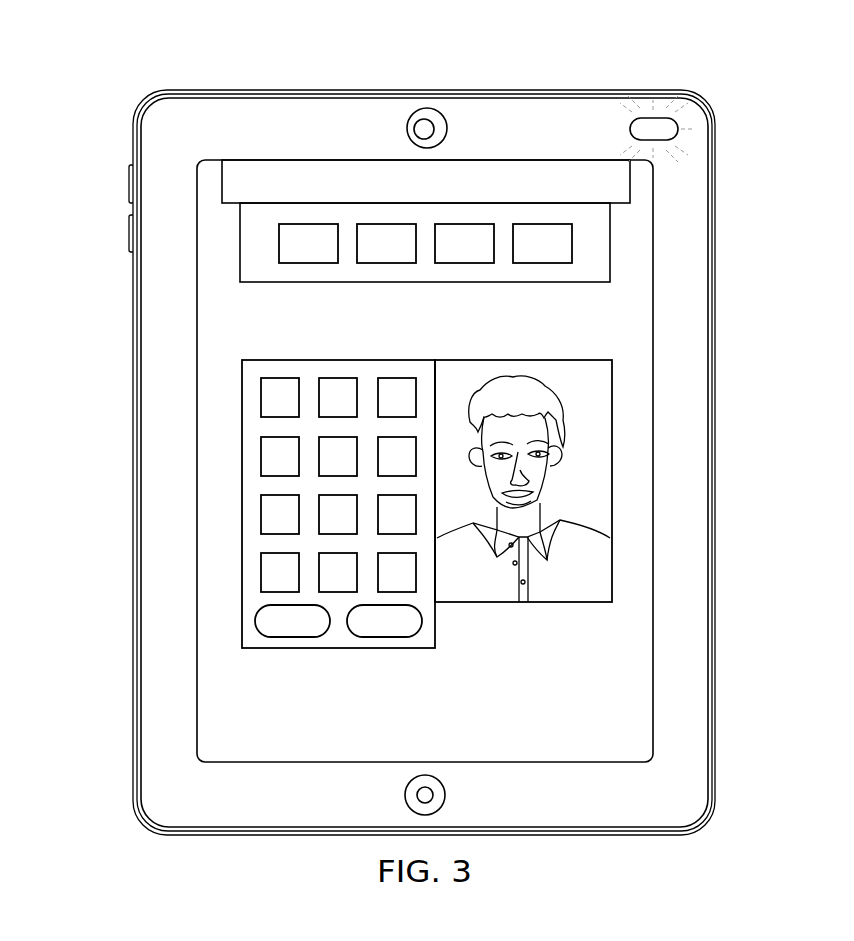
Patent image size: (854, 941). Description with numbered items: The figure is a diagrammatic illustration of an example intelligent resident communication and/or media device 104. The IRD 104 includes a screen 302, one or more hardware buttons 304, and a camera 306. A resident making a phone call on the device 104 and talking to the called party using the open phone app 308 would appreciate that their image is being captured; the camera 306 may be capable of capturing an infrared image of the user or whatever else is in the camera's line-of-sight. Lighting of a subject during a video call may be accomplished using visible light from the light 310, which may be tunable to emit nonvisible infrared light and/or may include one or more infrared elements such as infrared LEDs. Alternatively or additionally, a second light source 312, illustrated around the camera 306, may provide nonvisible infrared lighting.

The intelligent resident communication and/or media device 104 is at (588, 60).
The screen 302 is at (330, 757).
The hardware buttons 304 is at (119, 214).
The camera 306 is at (428, 133).
The phone app 308 is at (503, 622).
The light 310 is at (630, 129).
The second light source 312 is at (407, 130).